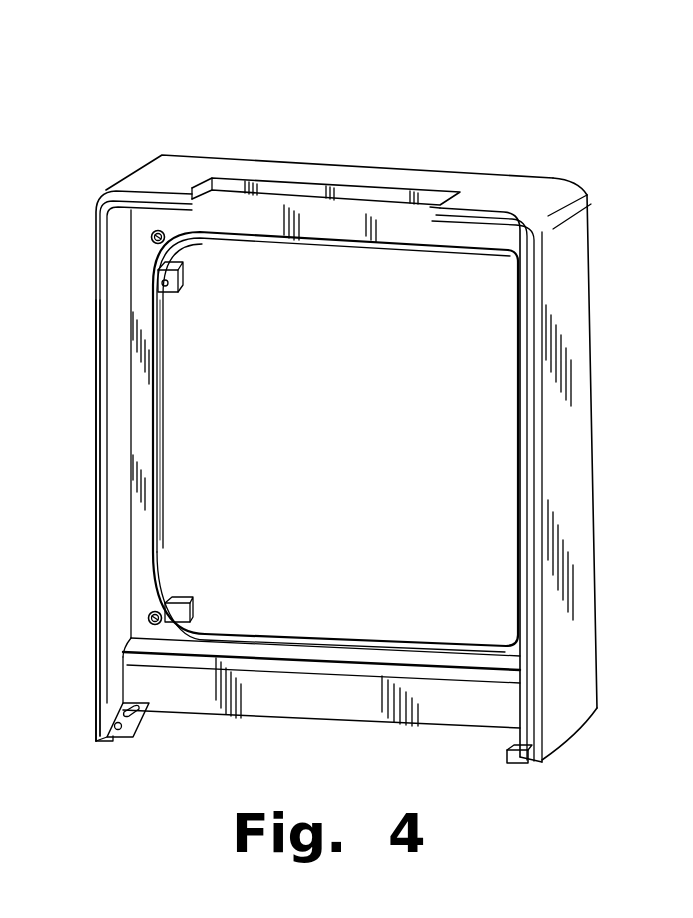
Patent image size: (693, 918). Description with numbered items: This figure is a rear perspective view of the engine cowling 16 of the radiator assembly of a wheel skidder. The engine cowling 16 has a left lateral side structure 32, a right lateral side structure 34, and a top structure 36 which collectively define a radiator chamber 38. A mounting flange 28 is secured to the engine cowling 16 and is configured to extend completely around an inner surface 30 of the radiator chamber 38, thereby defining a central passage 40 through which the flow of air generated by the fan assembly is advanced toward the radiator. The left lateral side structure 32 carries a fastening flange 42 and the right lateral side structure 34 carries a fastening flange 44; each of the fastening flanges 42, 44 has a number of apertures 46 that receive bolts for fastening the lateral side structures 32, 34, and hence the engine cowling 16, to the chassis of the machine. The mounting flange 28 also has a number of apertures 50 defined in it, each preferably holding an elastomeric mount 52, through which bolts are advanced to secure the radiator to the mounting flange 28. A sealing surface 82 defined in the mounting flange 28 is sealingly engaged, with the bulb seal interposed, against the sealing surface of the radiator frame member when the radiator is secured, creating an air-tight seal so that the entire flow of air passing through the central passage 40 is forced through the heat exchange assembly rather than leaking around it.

The engine cowling 16 is at (566, 85).
The mounting flange 28 is at (150, 525).
The inner surface 30 is at (104, 333).
The left lateral side structure 32 is at (95, 504).
The right lateral side structure 34 is at (586, 471).
The top structure 36 is at (276, 168).
The radiator chamber 38 is at (186, 421).
The central passage 40 is at (320, 235).
The fastening flange 42 is at (120, 743).
The fastening flange 44 is at (516, 767).
The apertures 46 is at (130, 722).
The apertures 50 is at (167, 228).
The elastomeric mount 52 is at (172, 600).
The sealing surface 82 is at (400, 232).